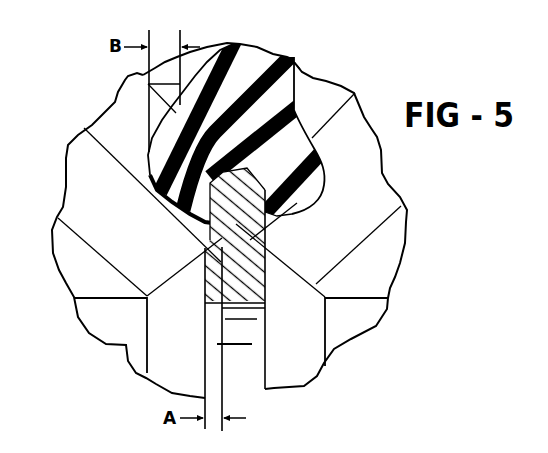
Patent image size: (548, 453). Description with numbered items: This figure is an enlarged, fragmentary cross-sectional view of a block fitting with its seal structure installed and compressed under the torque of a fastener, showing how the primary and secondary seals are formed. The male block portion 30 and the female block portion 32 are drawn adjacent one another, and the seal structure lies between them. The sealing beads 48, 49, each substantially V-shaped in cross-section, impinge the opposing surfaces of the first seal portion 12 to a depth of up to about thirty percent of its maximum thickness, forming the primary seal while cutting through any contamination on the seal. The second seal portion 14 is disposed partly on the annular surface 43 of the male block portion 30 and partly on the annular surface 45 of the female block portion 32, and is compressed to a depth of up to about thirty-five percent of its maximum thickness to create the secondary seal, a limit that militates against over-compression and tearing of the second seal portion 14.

The first seal portion 12 is at (221, 280).
The second seal portion 14 is at (272, 46).
The male block portion 30 is at (79, 156).
The female block portion 32 is at (365, 181).
The annular surface 43 is at (146, 89).
The annular surface 45 is at (296, 83).
The sealing bead 48 is at (184, 253).
The sealing bead 49 is at (308, 253).